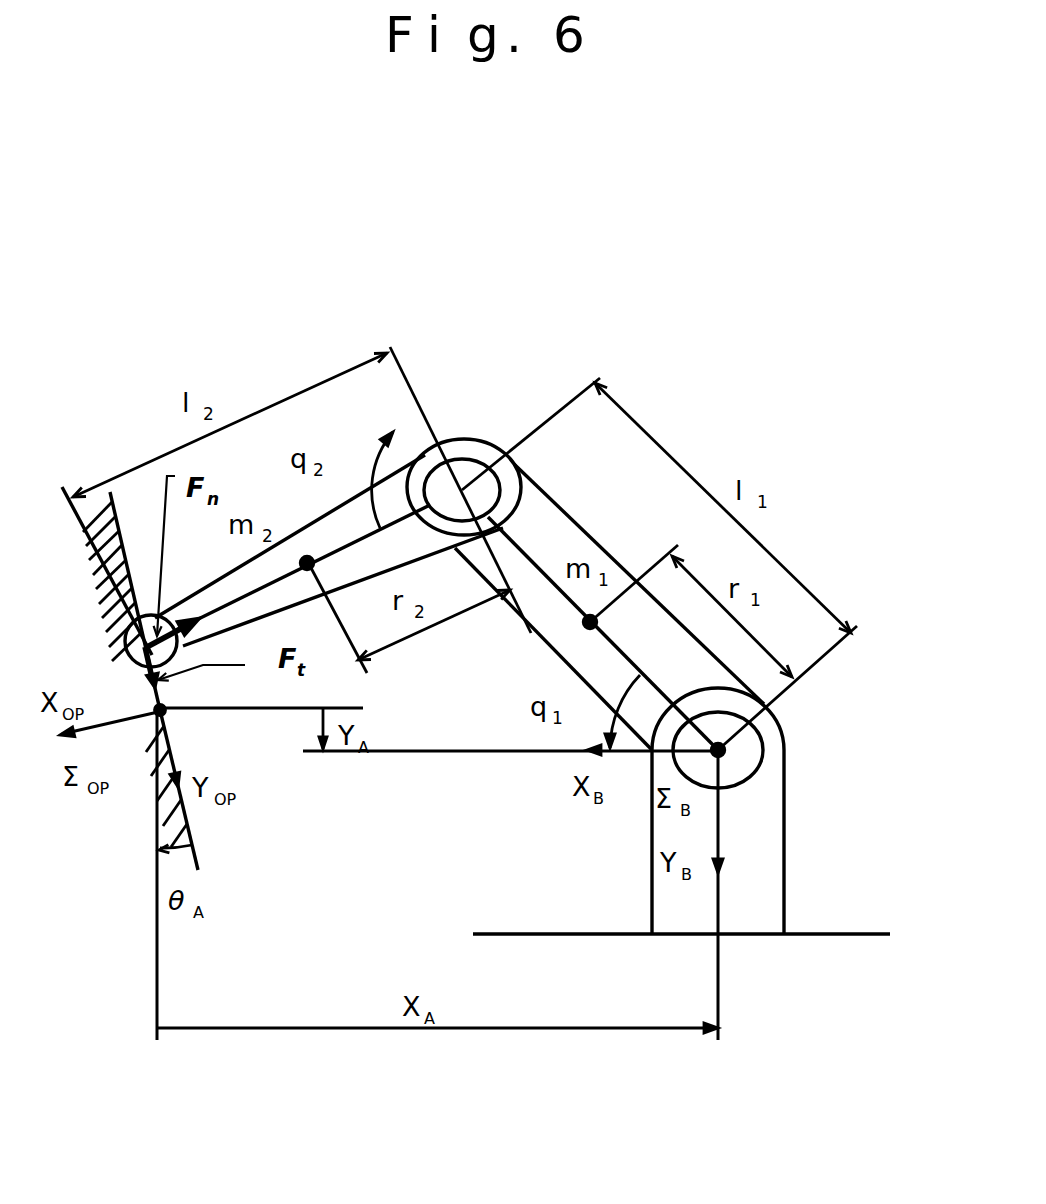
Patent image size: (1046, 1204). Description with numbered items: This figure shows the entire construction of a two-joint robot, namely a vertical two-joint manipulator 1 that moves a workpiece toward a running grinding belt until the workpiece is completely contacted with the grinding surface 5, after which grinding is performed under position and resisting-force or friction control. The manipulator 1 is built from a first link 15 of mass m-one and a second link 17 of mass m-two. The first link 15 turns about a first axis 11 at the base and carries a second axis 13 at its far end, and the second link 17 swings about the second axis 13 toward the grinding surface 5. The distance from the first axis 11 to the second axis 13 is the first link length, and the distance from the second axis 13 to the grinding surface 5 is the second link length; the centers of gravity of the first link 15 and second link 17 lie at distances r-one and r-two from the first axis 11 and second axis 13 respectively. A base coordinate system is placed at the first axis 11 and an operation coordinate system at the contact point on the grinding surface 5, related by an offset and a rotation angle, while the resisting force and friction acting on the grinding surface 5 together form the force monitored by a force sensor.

The vertical two-joint manipulator 1 is at (780, 459).
The grinding surface 5 is at (130, 545).
The first axis 11 is at (750, 747).
The second axis 13 is at (470, 463).
The first link 15 is at (557, 516).
The second link 17 is at (288, 533).